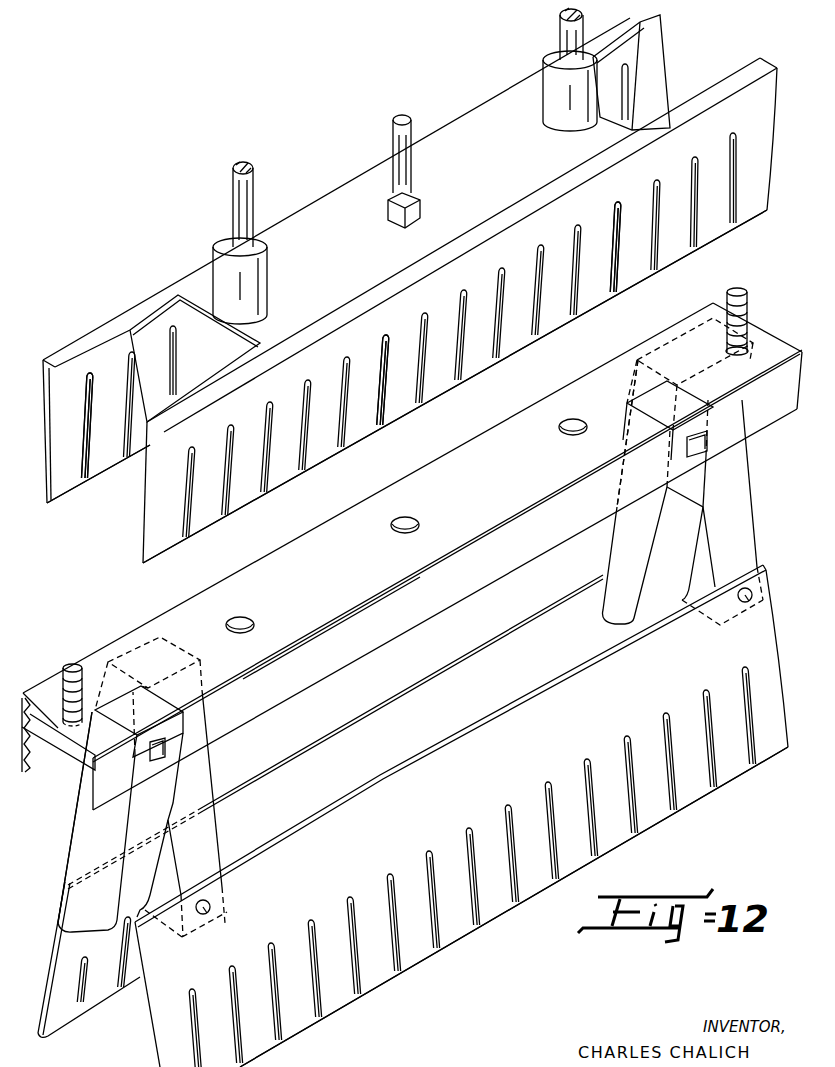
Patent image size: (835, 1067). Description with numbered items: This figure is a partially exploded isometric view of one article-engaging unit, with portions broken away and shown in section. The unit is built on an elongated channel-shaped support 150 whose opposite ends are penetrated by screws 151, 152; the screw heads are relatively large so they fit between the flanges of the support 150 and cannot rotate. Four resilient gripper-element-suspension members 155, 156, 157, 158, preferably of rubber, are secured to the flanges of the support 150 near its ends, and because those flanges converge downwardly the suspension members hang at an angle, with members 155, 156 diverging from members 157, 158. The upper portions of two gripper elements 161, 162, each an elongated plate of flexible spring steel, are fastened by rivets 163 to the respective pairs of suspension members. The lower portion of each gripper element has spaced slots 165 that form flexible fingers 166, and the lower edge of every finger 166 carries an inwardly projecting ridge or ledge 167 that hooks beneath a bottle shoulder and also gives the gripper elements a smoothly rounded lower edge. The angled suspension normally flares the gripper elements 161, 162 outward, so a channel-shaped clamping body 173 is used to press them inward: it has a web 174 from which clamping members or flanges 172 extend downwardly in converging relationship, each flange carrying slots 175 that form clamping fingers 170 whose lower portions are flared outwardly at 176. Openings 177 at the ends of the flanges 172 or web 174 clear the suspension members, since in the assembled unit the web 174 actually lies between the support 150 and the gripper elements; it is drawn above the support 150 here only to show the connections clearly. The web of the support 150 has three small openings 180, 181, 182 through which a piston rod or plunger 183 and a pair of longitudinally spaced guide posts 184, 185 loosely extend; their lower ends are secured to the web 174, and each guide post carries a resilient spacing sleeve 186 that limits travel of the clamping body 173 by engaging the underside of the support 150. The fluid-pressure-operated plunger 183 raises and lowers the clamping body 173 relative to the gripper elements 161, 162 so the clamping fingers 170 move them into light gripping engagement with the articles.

The channel-shaped support 150 is at (313, 542).
The screw 151 is at (740, 289).
The screw 152 is at (70, 667).
The resilient gripper-element-suspension member 155 is at (751, 498).
The resilient gripper-element-suspension member 156 is at (206, 766).
The resilient gripper-element-suspension member 157 is at (610, 553).
The resilient gripper-element-suspension member 158 is at (80, 830).
The gripper element 161 is at (406, 773).
The gripper element 162 is at (362, 701).
The rivet 163 is at (744, 603).
The slot 165 is at (576, 784).
The flexible finger 166 is at (580, 872).
The ridge or ledge 167 is at (100, 1000).
The clamping finger 170 is at (591, 316).
The clamping member or flange 172 is at (376, 310).
The channel-shaped clamping body 173 is at (463, 104).
The web 174 is at (311, 228).
The slot 175 is at (603, 237).
The outwardly flared lower portion 176 is at (47, 504).
The opening 177 is at (699, 84).
The opening 180 is at (413, 518).
The opening 181 is at (559, 430).
The opening 182 is at (243, 618).
The piston rod or plunger 183 is at (413, 159).
The guide post 184 is at (558, 38).
The guide post 185 is at (260, 158).
The spacing sleeve 186 is at (258, 270).